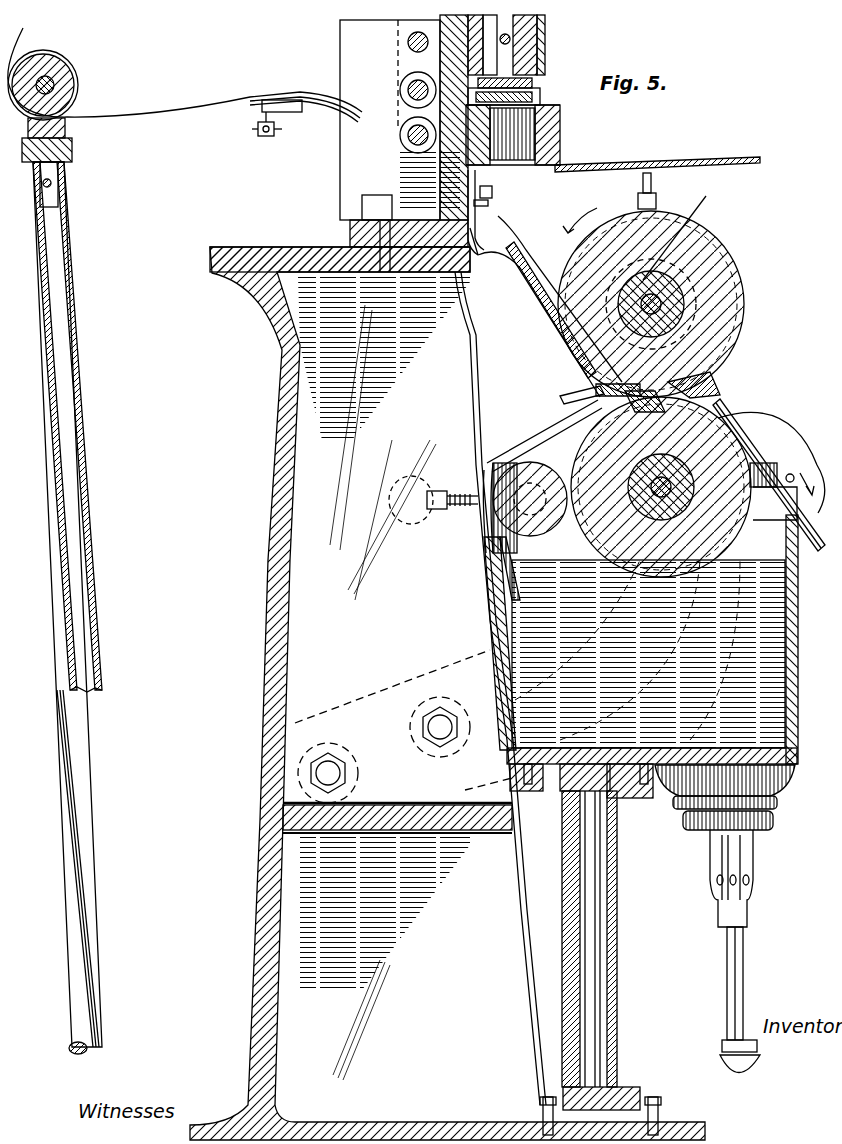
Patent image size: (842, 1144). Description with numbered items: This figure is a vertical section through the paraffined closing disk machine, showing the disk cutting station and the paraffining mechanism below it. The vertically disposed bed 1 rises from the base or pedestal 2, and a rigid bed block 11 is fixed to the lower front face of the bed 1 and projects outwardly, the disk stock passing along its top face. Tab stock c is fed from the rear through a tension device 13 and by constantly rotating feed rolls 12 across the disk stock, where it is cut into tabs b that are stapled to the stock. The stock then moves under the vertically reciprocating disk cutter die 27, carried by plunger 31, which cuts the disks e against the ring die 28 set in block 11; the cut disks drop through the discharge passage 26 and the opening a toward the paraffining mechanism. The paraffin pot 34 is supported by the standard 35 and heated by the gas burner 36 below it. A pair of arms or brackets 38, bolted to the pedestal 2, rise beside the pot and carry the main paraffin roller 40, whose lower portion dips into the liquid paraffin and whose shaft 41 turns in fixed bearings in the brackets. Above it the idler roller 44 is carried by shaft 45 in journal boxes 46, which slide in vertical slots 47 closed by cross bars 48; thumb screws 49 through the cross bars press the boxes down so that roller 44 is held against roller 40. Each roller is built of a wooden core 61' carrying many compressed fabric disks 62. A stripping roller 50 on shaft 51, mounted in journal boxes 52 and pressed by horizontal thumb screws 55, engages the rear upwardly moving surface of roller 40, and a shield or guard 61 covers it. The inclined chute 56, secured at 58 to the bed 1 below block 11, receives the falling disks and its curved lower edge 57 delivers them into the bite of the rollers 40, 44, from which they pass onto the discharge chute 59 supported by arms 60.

The bed 1 is at (356, 190).
The base or pedestal 2 is at (276, 672).
The bed block 11 is at (560, 145).
The feed rolls 12 is at (398, 88).
The tension device 13 is at (296, 102).
The disk discharge passage 26 is at (494, 192).
The disk cutter die 27 is at (540, 82).
The ring die 28 is at (558, 120).
The plunger 31 is at (540, 30).
The paraffin pot 34 is at (790, 745).
The standard 35 is at (600, 995).
The gas burner 36 is at (766, 815).
The arms or brackets 38 is at (362, 705).
The main paraffin roller 40 is at (735, 405).
The roller shaft 41 is at (762, 424).
The paraffin idler roller 44 is at (684, 298).
The idler roller shaft 45 is at (680, 312).
The journal boxes 46 is at (690, 282).
The guide-ways or slots 47 is at (700, 256).
The cross bars 48 is at (712, 230).
The thumb screws 49 is at (657, 205).
The stripping roller 50 is at (515, 462).
The stripping roller shaft 51 is at (486, 530).
The journal boxes 52 is at (492, 560).
The thumb screws 55 is at (448, 490).
The chute or guide 56 is at (540, 290).
The lower discharge edge 57 is at (580, 402).
The chute securing point 58 is at (490, 204).
The discharge chute 59 is at (790, 412).
The arms 60 is at (774, 613).
The shield or guard 61 is at (525, 403).
The core 61' is at (612, 329).
The fabric disks 62 is at (706, 372).
The slot a is at (535, 90).
The tabs b is at (520, 278).
The tab stock c is at (182, 140).
The disks e is at (492, 212).